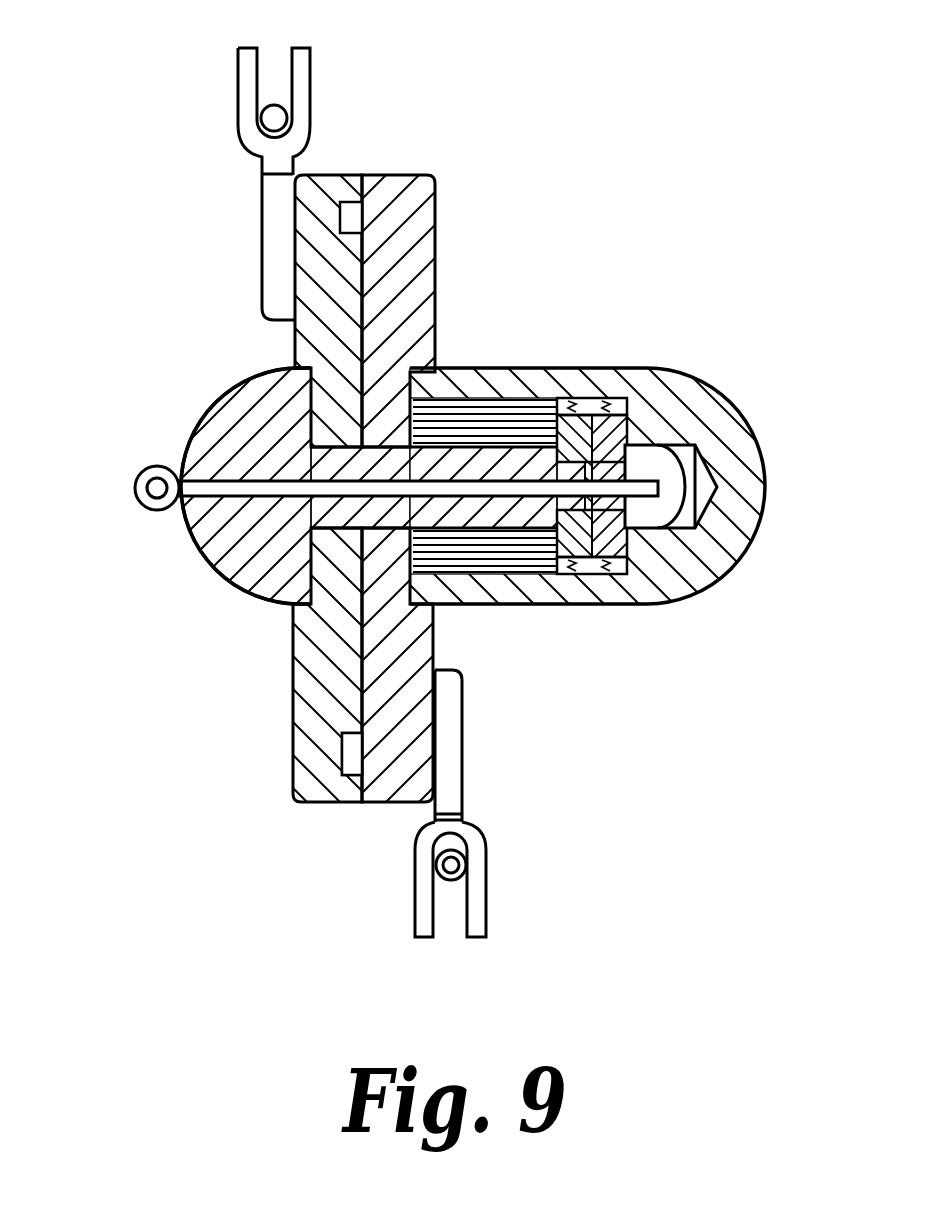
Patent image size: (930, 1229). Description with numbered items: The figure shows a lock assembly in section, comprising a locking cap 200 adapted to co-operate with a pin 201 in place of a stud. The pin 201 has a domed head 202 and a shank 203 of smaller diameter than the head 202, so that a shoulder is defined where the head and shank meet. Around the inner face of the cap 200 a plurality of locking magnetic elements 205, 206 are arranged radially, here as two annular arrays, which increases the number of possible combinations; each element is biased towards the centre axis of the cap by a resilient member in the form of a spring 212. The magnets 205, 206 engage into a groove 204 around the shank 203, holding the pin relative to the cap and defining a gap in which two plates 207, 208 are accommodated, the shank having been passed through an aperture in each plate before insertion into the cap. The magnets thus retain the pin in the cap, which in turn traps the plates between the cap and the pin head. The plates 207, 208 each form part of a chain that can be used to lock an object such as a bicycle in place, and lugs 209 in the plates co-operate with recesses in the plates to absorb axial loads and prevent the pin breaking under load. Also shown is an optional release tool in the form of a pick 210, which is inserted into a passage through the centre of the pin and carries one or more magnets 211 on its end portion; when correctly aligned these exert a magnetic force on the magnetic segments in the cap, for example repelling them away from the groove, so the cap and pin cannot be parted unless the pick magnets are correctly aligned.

The locking cap 200 is at (648, 608).
The pin 201 is at (207, 560).
The domed head 202 is at (197, 420).
The shank 203 is at (467, 445).
The groove 204 is at (687, 597).
The locking magnetic elements 205 is at (536, 398).
The locking magnetic elements 206 is at (622, 414).
The plate 207 is at (293, 743).
The plate 208 is at (435, 643).
The lugs 209 is at (347, 740).
The pick 210 is at (135, 502).
The magnets 211 is at (665, 445).
The spring 212 is at (615, 575).